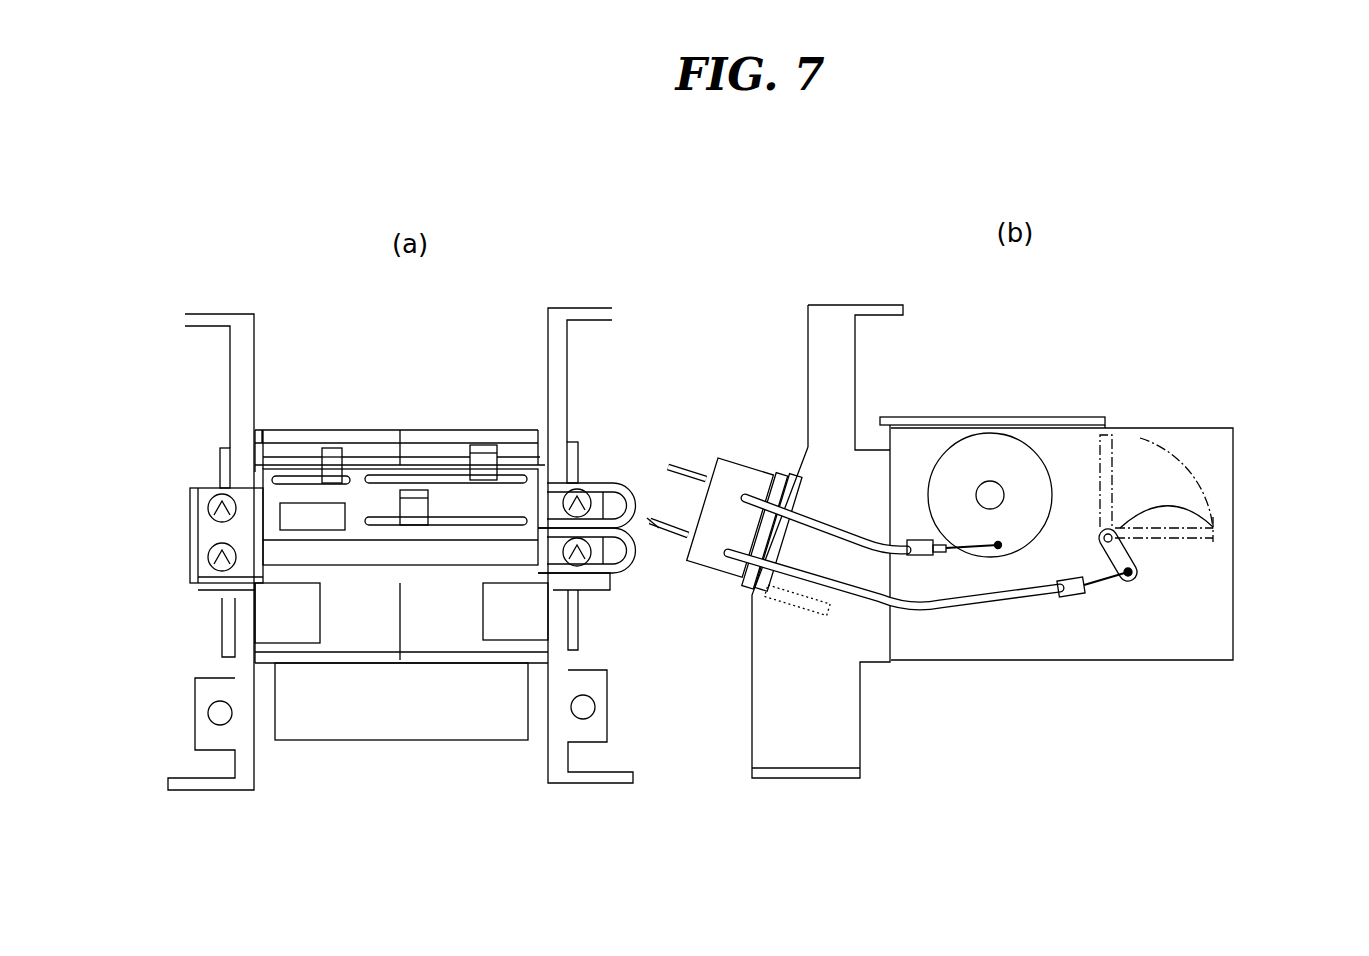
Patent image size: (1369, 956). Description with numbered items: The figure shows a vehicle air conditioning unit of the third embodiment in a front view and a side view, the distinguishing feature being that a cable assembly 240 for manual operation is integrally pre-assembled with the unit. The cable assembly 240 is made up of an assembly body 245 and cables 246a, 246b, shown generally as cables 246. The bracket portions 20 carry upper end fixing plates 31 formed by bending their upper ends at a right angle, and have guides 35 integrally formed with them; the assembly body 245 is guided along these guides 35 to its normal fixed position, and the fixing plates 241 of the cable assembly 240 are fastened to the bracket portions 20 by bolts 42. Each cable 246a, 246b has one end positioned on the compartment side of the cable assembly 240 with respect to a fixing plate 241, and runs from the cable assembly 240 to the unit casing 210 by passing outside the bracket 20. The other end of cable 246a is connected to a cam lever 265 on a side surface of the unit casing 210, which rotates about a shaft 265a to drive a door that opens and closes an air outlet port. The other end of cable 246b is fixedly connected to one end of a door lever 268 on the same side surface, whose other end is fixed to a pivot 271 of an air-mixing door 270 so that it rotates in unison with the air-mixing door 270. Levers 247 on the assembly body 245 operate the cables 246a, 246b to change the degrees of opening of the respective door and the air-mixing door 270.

The bracket portion 20 is at (268, 380).
The upper end fixing plate 31 is at (213, 314).
The guide 35 is at (790, 598).
The bolt 42 is at (188, 506).
The unit casing 210 is at (1098, 412).
The cable assembly 240 is at (276, 492).
The fixing plate 241 is at (200, 588).
The assembly body 245 is at (200, 568).
The cable 246 is at (640, 490).
The cable 246a is at (822, 510).
The cable 246b is at (914, 605).
The lever 247 is at (335, 452).
The cam lever 265 is at (1030, 447).
The shaft 265a is at (997, 481).
The door lever 268 is at (1133, 552).
The air-mixing door 270 is at (1140, 438).
The pivot 271 is at (1215, 528).